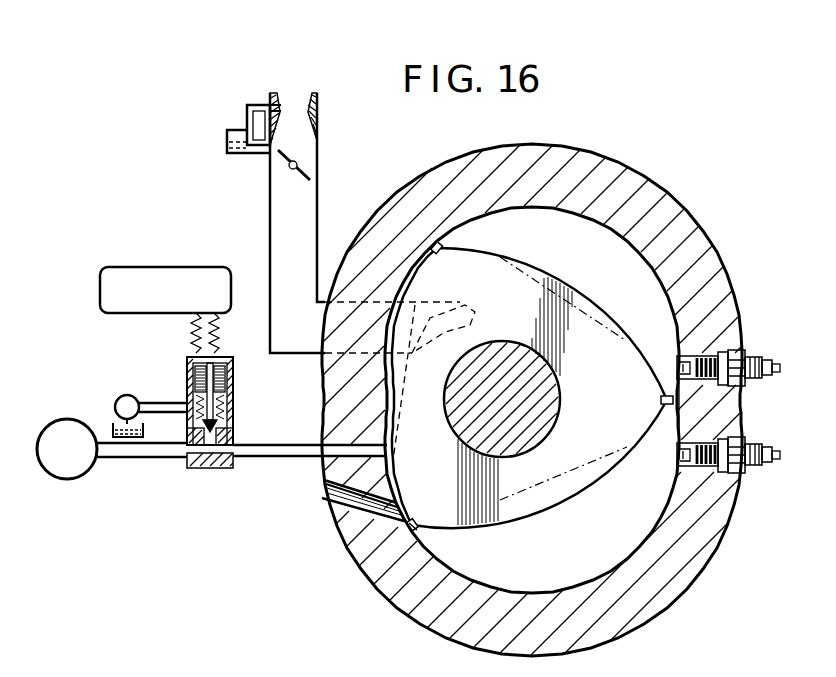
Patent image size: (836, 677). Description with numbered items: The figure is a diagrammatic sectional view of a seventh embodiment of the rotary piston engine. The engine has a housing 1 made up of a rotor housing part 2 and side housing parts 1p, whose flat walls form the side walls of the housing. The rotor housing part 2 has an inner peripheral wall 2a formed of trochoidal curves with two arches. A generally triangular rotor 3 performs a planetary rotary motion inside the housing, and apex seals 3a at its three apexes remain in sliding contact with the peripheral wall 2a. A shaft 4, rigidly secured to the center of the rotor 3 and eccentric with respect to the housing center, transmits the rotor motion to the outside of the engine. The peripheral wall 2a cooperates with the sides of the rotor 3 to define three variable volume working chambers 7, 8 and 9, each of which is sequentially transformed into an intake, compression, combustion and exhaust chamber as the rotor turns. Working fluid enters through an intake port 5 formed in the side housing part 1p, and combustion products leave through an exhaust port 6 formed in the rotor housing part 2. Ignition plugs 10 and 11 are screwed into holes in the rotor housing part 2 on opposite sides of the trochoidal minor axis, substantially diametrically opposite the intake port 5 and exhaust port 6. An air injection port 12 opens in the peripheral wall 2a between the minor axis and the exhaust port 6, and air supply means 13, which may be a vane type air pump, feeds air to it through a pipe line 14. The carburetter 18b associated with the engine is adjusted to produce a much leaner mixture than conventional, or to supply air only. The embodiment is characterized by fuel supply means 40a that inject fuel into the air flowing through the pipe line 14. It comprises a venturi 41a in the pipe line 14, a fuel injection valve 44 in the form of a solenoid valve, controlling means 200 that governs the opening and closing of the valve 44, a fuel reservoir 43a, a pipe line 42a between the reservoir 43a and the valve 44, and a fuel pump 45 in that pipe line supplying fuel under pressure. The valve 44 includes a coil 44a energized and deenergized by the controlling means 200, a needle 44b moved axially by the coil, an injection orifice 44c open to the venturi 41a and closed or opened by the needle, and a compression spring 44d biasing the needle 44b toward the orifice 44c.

The housing 1 is at (632, 268).
The side housing part 1p is at (660, 264).
The rotor housing part 2 is at (688, 252).
The peripheral wall 2a is at (668, 312).
The rotor 3 is at (499, 264).
The apex seal 3a is at (418, 532).
The shaft 4 is at (548, 399).
The intake port 5 is at (462, 312).
The exhaust port 6 is at (340, 510).
The working chamber 7 is at (410, 282).
The working chamber 8 is at (600, 262).
The working chamber 9 is at (598, 557).
The ignition plug 10 is at (744, 466).
The ignition plug 11 is at (746, 356).
The air injection port 12 is at (332, 462).
The air supply means 13 is at (69, 479).
The pipe line 14 is at (129, 458).
The carburetter 18b is at (296, 110).
The controlling means 200 is at (172, 267).
The fuel supply means 40a is at (238, 461).
The venturi 41a is at (208, 470).
The pipe line 42a is at (187, 403).
The fuel reservoir 43a is at (113, 428).
The fuel injection valve 44 is at (188, 362).
The coil 44a is at (232, 368).
The needle 44b is at (232, 395).
The injection orifice 44c is at (192, 467).
The compression spring 44d is at (234, 430).
The fuel pump 45 is at (121, 396).